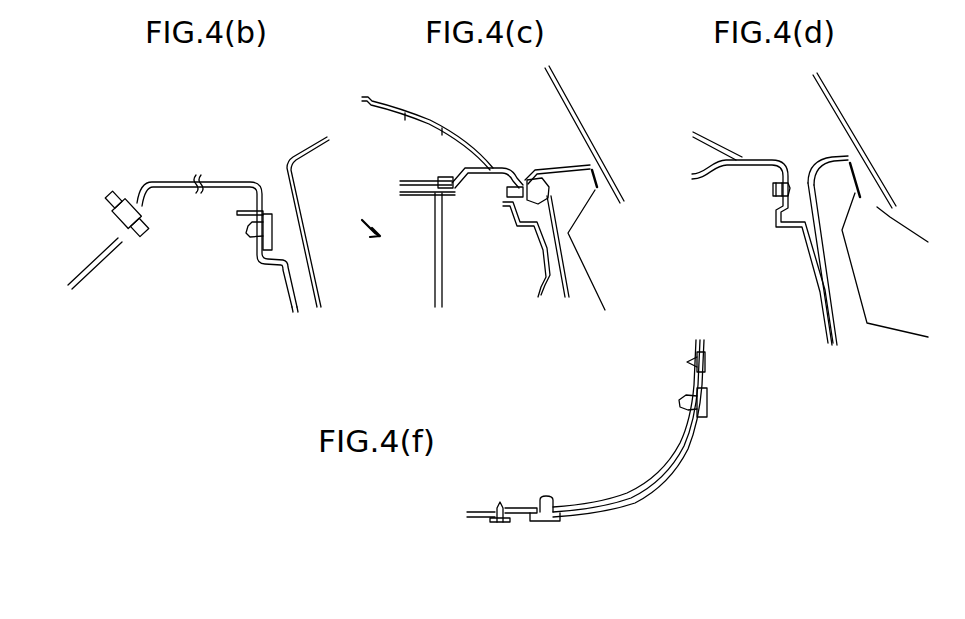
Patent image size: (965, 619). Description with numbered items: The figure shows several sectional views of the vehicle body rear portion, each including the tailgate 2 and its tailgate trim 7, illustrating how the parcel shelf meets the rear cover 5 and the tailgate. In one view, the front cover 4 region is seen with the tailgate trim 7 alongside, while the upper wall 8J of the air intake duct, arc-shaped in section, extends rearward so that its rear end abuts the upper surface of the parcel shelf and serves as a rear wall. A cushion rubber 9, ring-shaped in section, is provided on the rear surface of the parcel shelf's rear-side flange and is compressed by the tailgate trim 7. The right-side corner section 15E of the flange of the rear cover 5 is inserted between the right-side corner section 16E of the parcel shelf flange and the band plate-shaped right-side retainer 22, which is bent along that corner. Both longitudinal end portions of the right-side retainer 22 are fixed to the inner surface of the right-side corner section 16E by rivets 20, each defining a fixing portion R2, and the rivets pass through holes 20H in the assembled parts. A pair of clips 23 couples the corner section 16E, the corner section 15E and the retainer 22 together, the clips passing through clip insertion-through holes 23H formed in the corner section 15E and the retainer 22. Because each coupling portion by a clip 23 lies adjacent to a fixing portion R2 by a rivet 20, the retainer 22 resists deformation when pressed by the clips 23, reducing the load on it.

In FIG. 4C, the tailgate 2 is at (611, 134).
In FIG. 4D, the tailgate 2 is at (886, 145).
In FIG. 4B, the front cover 4 is at (111, 253).
In FIG. 4B, the rear cover 5 is at (297, 293).
In FIG. 4C, the rear cover 5 is at (547, 288).
In FIG. 4D, the rear cover 5 is at (845, 332).
In FIG. 4B, the tailgate trim 7 is at (307, 261).
In FIG. 4C, the tailgate trim 7 is at (560, 250).
In FIG. 4D, the tailgate trim 7 is at (837, 280).
In FIG. 4C, the upper wall 8J is at (393, 105).
In FIG. 4D, the upper wall 8J is at (710, 140).
In FIG. 4C, the cushion rubber 9 is at (525, 177).
In FIG. 4D, the rivet 20 is at (790, 192).
In FIG. 4F, the rivet 20 is at (498, 523).
In FIG. 4F, the clip mounting hole 20H is at (495, 503).
In FIG. 4F, the right-side retainer 22 is at (652, 458).
In FIG. 4B, the clip 23 is at (268, 200).
In FIG. 4F, the clip 23 is at (547, 523).
In FIG. 4F, the clip insertion-through hole 23H is at (700, 417).
In FIG. 4F, the right-side corner section 15E is at (685, 467).
In FIG. 4F, the right-side corner section 16E is at (675, 501).
In FIG. 4D, the fixing portion R2 is at (799, 168).